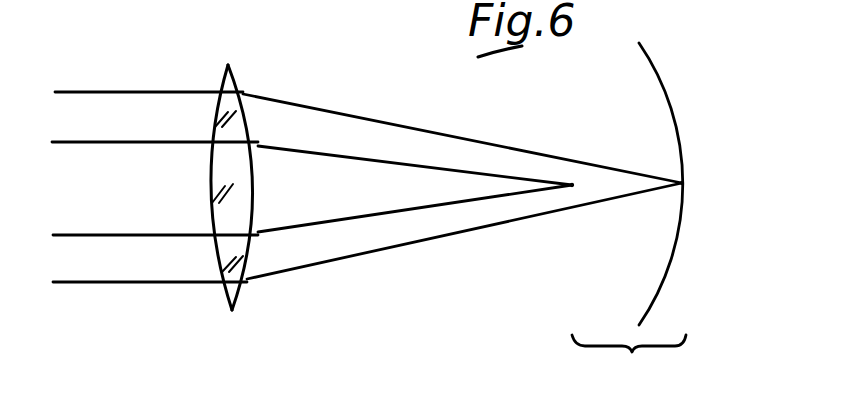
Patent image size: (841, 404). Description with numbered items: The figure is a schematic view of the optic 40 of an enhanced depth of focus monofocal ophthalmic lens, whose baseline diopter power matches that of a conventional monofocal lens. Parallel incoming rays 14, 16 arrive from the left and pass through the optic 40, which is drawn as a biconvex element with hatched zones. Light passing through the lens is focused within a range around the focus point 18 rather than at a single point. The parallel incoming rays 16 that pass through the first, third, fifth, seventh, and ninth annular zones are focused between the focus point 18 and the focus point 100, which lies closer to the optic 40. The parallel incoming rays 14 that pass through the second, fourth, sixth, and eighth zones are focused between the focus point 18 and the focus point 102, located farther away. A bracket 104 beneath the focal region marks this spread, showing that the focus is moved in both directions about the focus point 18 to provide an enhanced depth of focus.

The parallel incoming rays 14 is at (128, 92).
The parallel incoming rays 16 is at (112, 143).
The optic 40 is at (240, 80).
The focus point 18 is at (614, 183).
The focus point 100 is at (572, 186).
The focus point 102 is at (682, 183).
The focal region 104 is at (629, 362).